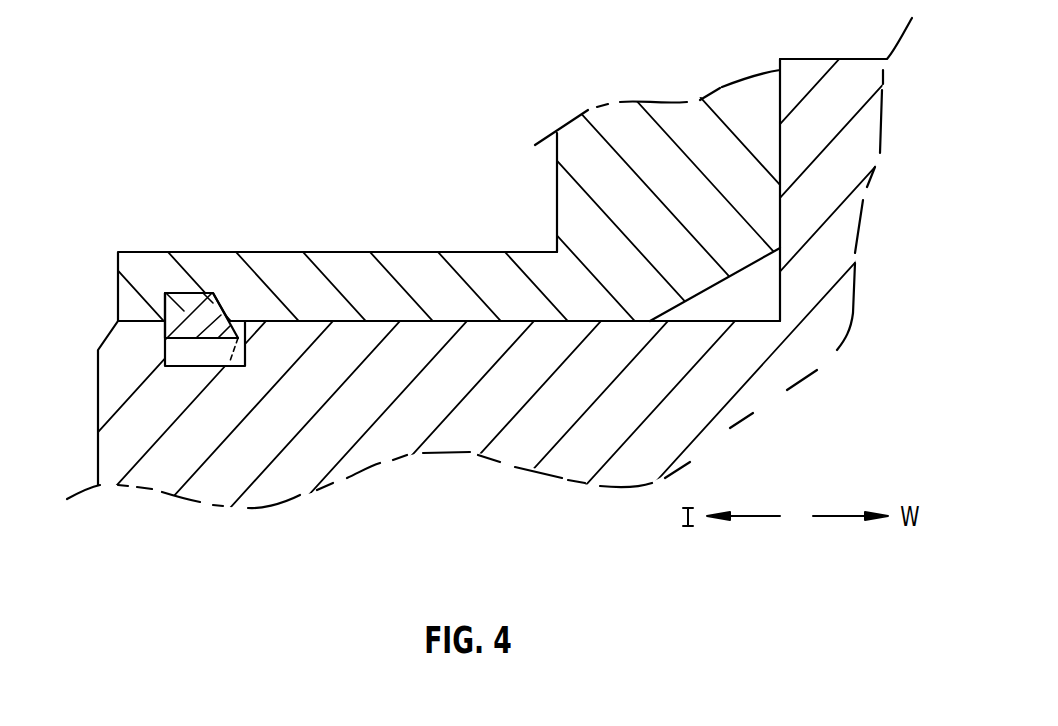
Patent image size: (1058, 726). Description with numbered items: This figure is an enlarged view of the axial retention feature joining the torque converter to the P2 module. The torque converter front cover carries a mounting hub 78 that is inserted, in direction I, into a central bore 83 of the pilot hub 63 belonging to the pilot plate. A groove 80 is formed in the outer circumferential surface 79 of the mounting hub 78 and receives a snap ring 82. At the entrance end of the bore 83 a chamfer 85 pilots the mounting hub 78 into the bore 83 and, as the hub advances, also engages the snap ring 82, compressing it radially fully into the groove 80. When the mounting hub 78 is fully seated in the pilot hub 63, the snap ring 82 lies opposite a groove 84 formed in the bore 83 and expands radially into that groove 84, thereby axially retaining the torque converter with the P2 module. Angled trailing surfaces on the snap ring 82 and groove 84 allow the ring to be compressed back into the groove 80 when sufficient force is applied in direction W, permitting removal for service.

The pilot hub 63 is at (493, 252).
The mounting hub 78 is at (445, 453).
The outer circumferential surface 79 is at (464, 258).
The groove 80 is at (191, 366).
The snap ring 82 is at (166, 294).
The central bore 83 is at (584, 322).
The groove 84 is at (200, 308).
The chamfer 85 is at (757, 250).